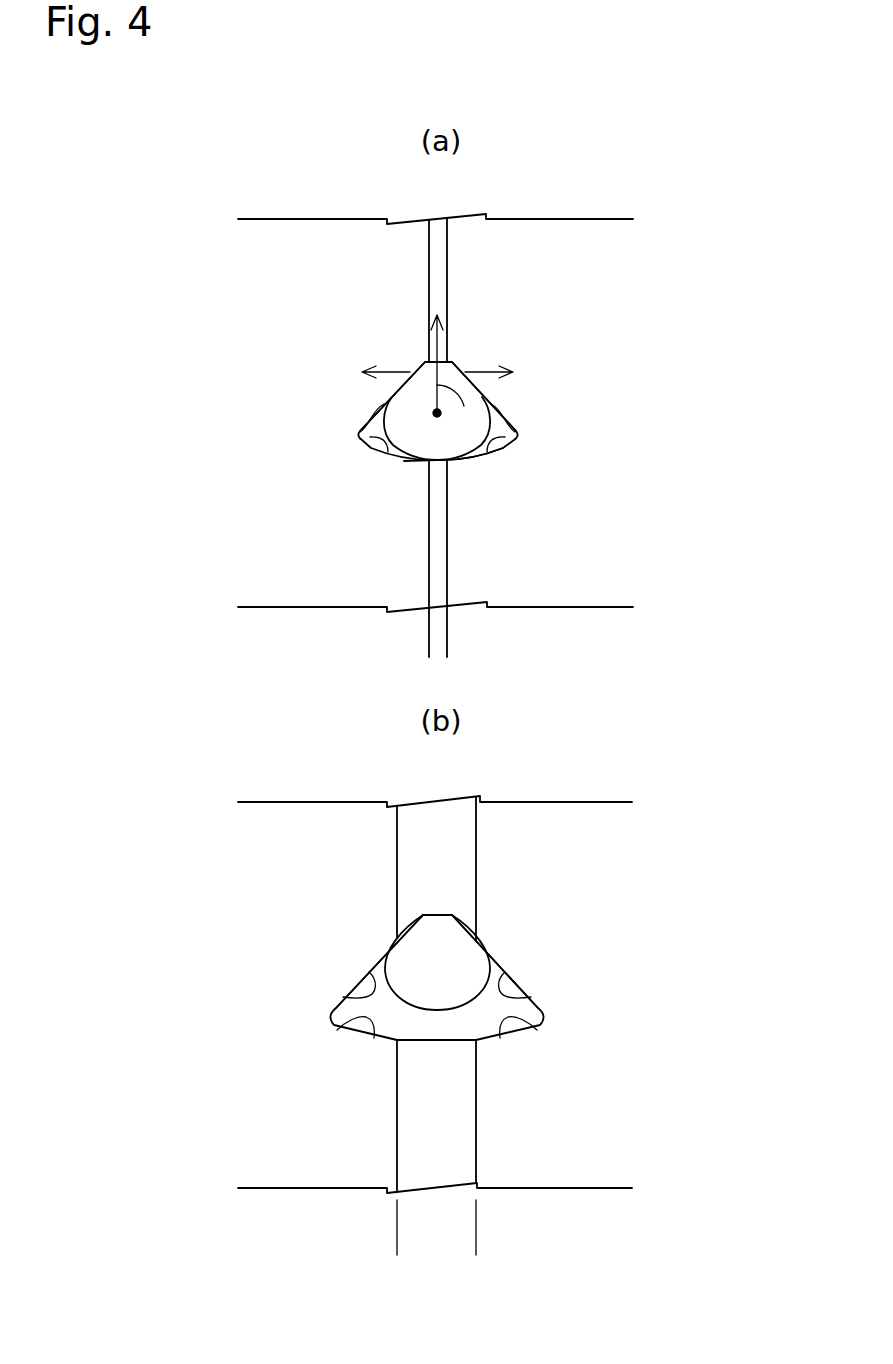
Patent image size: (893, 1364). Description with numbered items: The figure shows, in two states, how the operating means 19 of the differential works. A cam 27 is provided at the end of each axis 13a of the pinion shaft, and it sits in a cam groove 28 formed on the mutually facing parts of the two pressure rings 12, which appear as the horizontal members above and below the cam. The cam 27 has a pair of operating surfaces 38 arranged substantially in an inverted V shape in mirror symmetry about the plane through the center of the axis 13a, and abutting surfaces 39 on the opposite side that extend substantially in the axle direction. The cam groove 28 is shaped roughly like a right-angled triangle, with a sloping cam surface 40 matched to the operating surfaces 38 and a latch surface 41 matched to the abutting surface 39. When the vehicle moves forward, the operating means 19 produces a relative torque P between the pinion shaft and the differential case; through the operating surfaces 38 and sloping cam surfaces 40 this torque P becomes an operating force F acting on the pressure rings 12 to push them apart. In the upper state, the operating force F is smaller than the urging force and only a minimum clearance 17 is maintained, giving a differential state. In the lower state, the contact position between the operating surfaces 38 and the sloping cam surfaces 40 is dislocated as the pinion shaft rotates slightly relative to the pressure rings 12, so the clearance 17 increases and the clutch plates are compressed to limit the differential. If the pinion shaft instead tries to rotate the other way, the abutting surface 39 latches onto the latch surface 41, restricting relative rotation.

The pressure ring 12 is at (338, 230).
The axis of the pinion shaft 13a is at (436, 736).
The clearance 17 is at (380, 648).
The operating means 19 is at (657, 195).
The cam 27 is at (413, 445).
The cam groove 28 is at (202, 403).
The operating surface 38 is at (383, 398).
The abutting surface 39 is at (418, 458).
The sloping cam surface 40 is at (360, 433).
The latch surface 41 is at (363, 443).
The operating force F is at (394, 365).
The relative torque P is at (452, 416).